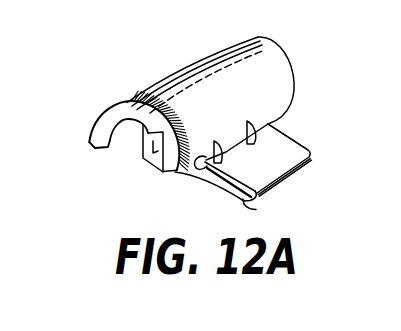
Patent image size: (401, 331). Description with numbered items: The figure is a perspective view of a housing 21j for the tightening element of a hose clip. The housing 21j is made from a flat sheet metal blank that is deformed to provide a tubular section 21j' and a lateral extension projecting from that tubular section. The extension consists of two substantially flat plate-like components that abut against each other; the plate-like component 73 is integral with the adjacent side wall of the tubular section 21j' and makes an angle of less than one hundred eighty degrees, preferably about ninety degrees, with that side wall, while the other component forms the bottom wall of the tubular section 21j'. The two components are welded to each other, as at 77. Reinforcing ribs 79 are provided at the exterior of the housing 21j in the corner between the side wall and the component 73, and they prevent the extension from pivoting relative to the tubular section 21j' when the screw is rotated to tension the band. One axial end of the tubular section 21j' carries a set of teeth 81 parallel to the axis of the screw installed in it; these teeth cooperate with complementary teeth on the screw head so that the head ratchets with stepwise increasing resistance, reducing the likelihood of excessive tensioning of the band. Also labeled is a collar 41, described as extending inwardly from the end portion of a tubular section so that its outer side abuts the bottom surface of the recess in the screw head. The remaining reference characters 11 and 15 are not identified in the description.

The base plate 11 is at (283, 153).
The bar 15 is at (213, 189).
The housing 21j is at (319, 55).
The tubular section 21j' is at (210, 86).
The inwardly extending collar 41 is at (112, 120).
The plate-like component 73 is at (255, 163).
The weld 77 is at (256, 210).
The reinforcing ribs 79 is at (257, 133).
The teeth 81 is at (137, 98).